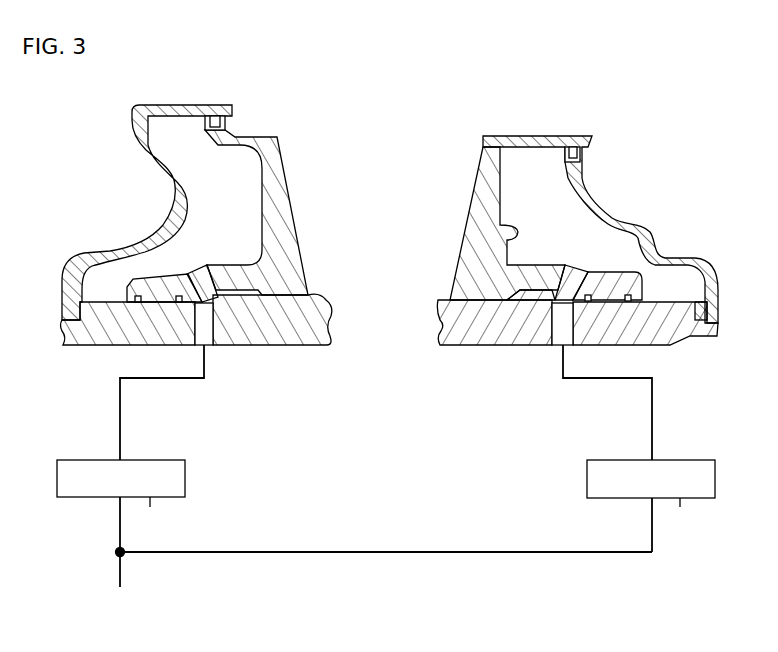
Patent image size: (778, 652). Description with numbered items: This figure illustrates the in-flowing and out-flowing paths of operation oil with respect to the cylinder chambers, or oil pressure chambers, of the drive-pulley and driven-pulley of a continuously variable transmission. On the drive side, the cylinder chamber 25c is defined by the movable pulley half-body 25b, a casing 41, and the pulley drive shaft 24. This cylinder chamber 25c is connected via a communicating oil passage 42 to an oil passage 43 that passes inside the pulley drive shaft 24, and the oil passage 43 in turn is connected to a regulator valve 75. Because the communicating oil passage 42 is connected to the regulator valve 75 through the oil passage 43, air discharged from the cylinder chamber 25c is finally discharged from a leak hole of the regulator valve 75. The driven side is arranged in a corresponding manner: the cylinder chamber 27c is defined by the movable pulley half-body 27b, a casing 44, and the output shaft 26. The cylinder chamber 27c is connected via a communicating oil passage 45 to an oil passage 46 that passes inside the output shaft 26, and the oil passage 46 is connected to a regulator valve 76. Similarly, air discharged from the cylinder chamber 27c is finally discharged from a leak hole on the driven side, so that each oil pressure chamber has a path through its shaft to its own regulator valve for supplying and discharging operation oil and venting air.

The casing 41 is at (132, 133).
The movable pulley half-body 25b is at (262, 137).
The cylinder chamber 25c is at (221, 197).
The communicating oil passage 42 is at (190, 275).
The pulley drive shaft 24 is at (290, 347).
The oil passage 43 is at (120, 400).
The regulator valve 75 is at (155, 460).
The movable pulley half-body 27b is at (515, 135).
The cylinder chamber 27c is at (553, 220).
The casing 44 is at (582, 177).
The communicating oil passage 45 is at (570, 273).
The output shaft 26 is at (483, 347).
The oil passage 46 is at (652, 400).
The regulator valve 76 is at (687, 460).